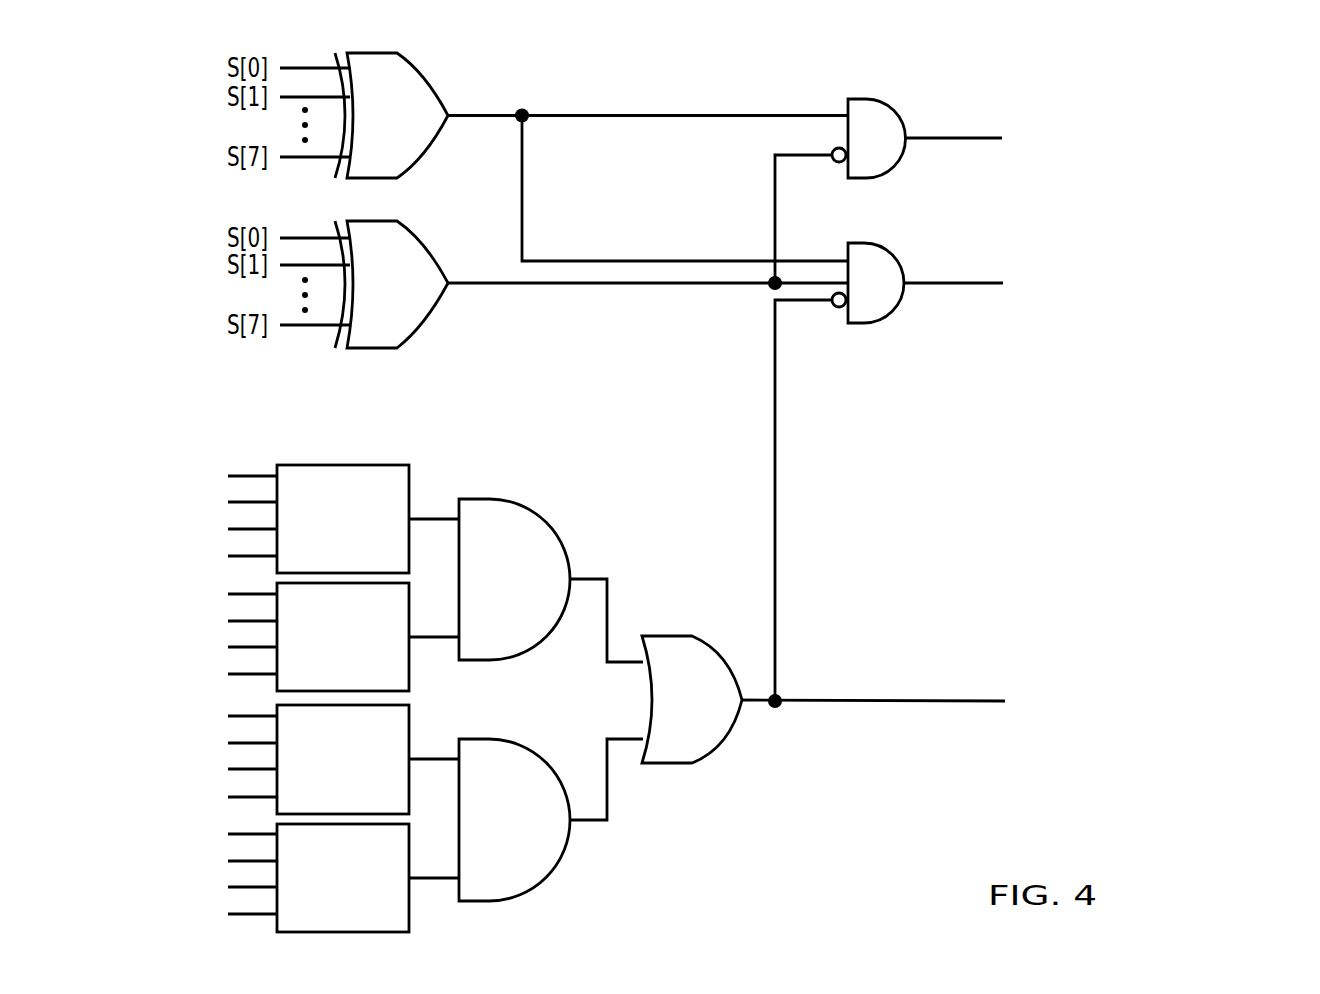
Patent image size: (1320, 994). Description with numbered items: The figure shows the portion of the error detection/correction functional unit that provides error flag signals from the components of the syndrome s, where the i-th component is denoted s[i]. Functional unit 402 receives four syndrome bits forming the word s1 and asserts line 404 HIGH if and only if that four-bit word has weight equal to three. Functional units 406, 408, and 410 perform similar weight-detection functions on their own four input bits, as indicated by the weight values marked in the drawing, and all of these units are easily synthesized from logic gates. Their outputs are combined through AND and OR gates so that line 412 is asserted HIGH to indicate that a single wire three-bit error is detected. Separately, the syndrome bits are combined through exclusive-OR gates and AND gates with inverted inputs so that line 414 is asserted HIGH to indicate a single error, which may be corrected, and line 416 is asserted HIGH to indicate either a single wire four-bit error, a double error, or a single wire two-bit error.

The functional unit 402 is at (378, 559).
The line 404 is at (427, 517).
The functional unit 406 is at (378, 682).
The functional unit 408 is at (378, 800).
The functional unit 410 is at (378, 919).
The line 412 is at (888, 700).
The line 414 is at (932, 282).
The line 416 is at (938, 135).